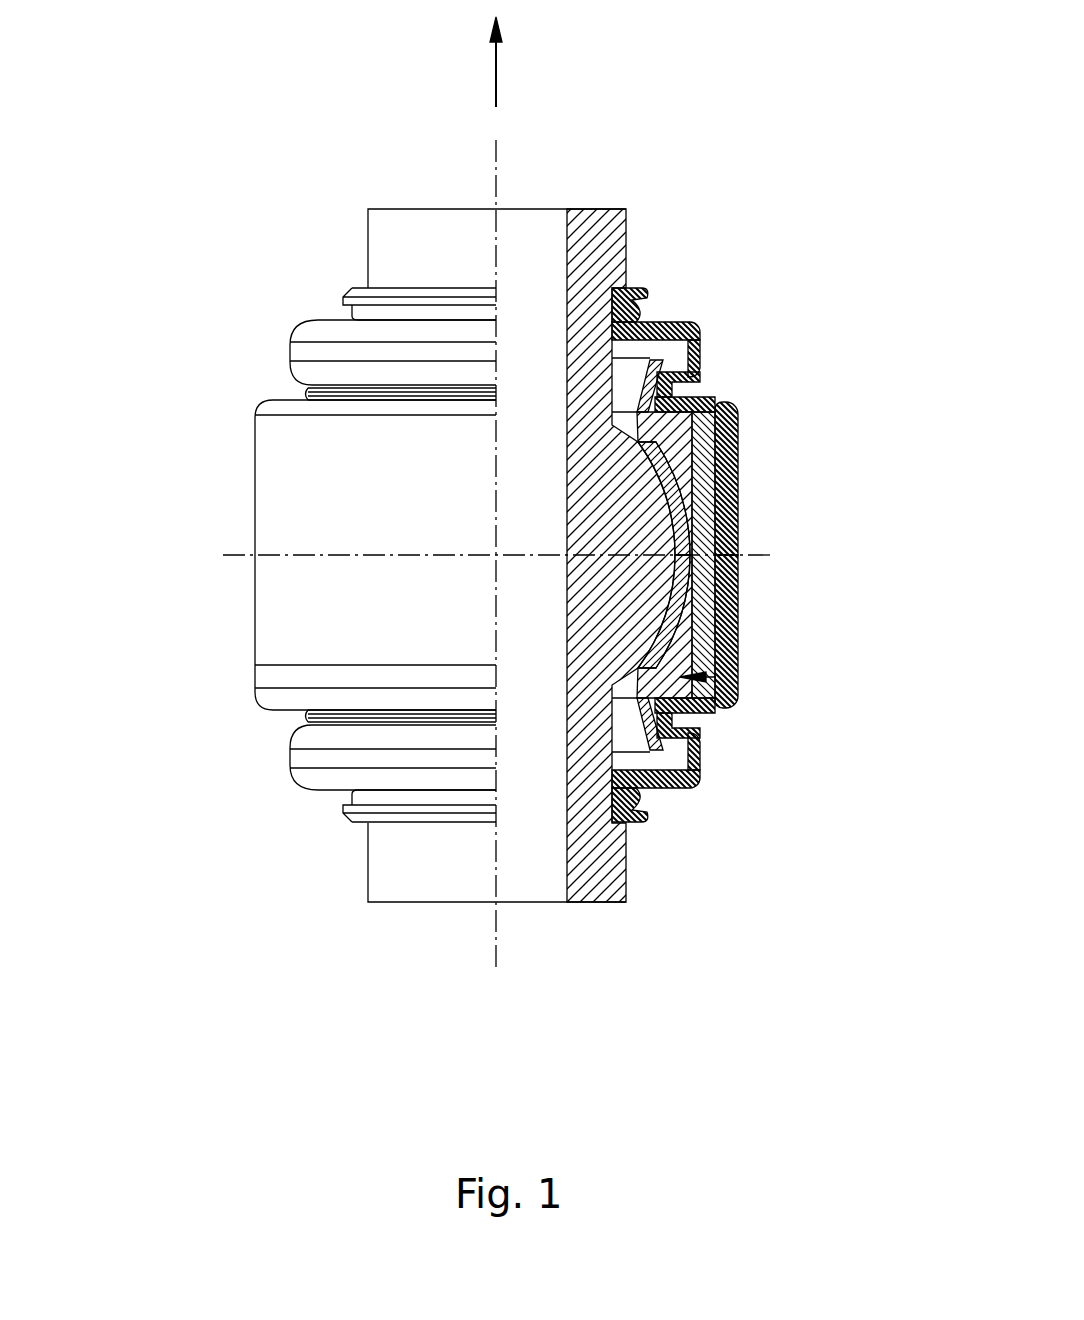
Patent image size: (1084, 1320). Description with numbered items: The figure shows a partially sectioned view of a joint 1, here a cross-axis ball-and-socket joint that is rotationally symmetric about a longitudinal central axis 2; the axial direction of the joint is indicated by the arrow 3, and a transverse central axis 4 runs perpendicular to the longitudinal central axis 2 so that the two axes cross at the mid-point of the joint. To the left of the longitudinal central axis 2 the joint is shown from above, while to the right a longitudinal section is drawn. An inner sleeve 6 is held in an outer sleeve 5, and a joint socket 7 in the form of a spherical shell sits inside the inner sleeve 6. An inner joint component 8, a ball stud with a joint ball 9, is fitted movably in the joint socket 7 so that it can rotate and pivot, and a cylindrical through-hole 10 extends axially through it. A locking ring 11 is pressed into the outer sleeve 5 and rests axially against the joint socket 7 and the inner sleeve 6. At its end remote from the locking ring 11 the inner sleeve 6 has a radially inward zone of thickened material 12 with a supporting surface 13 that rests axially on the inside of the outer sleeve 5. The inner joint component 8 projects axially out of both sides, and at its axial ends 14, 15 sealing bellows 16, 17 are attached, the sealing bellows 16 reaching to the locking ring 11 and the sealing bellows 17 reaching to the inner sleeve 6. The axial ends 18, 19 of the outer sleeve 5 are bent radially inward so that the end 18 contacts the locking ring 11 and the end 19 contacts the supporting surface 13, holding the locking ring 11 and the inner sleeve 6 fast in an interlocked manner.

The joint 1 is at (503, 533).
The longitudinal central axis 2 is at (494, 172).
The arrow 3 is at (498, 75).
The transverse central axis 4 is at (233, 555).
The outer sleeve 5 is at (786, 539).
The inner sleeve 6 is at (707, 498).
The joint socket 7 is at (680, 592).
The inner joint component 8 is at (588, 902).
The joint ball 9 is at (657, 628).
The through-hole 10 is at (527, 890).
The locking ring 11 is at (740, 418).
The thickened material 12 is at (716, 677).
The supporting surface 13 is at (703, 703).
The axial end 14 is at (600, 196).
The axial end 15 is at (417, 935).
The sealing bellows 16 is at (298, 330).
The sealing bellows 17 is at (303, 777).
The axial end of outer sleeve 18 is at (703, 398).
The axial end of outer sleeve 19 is at (703, 712).